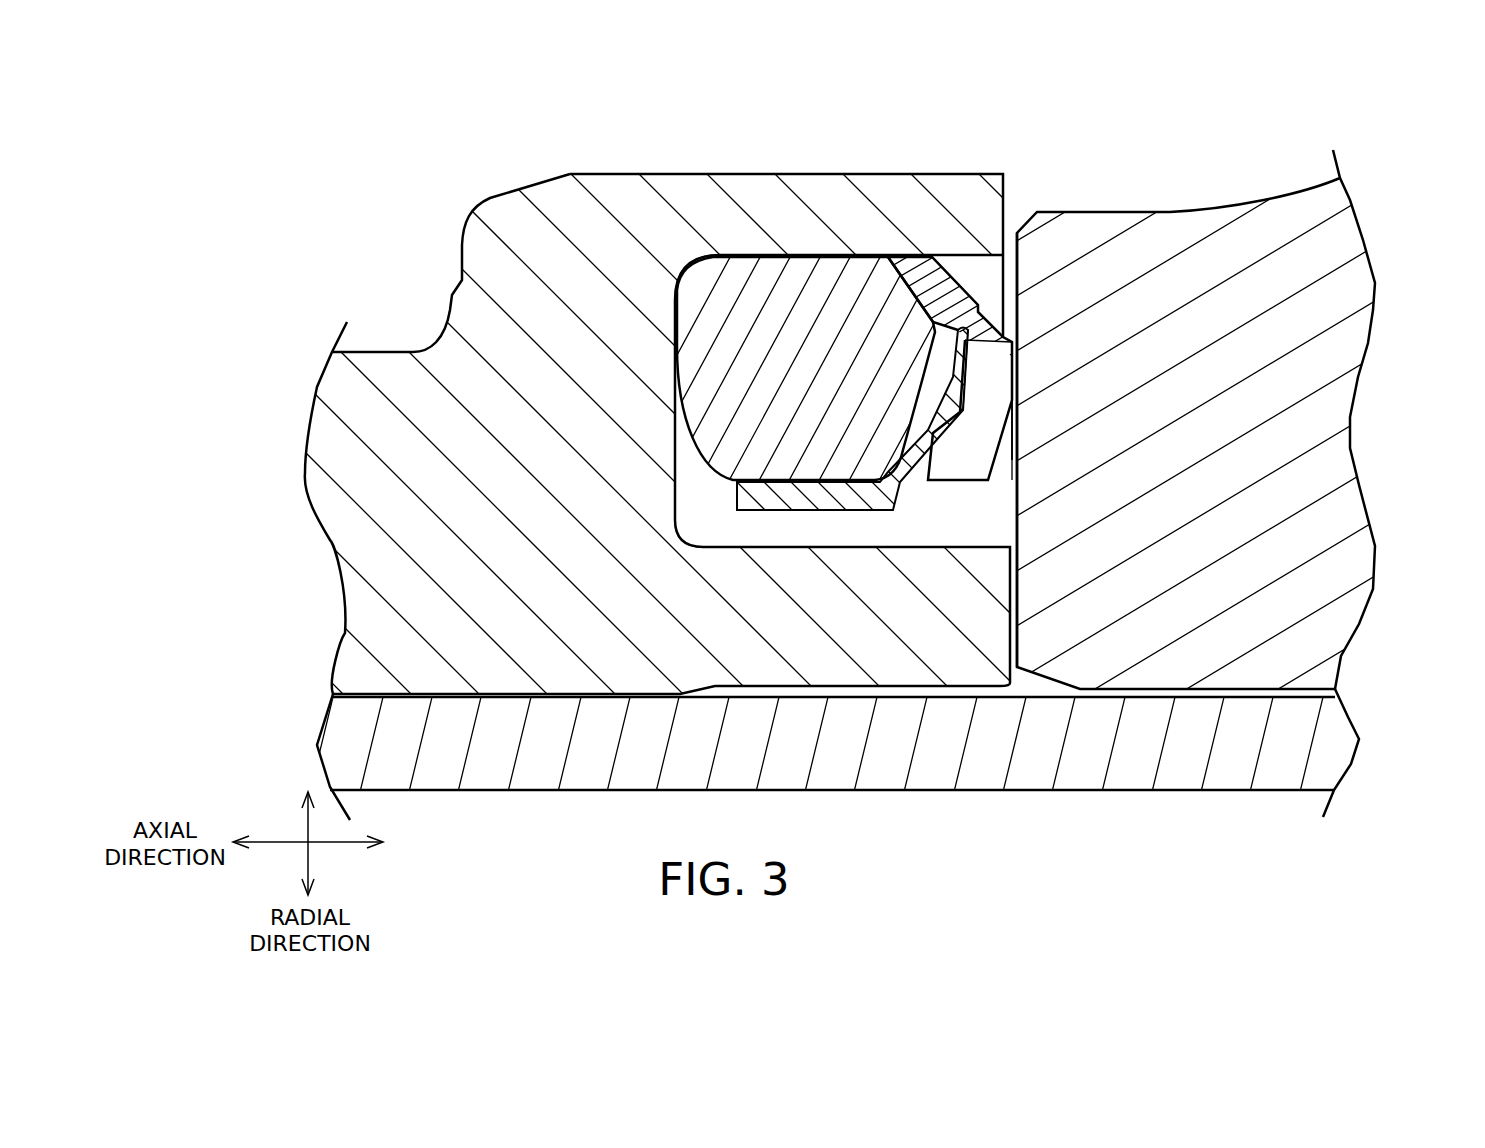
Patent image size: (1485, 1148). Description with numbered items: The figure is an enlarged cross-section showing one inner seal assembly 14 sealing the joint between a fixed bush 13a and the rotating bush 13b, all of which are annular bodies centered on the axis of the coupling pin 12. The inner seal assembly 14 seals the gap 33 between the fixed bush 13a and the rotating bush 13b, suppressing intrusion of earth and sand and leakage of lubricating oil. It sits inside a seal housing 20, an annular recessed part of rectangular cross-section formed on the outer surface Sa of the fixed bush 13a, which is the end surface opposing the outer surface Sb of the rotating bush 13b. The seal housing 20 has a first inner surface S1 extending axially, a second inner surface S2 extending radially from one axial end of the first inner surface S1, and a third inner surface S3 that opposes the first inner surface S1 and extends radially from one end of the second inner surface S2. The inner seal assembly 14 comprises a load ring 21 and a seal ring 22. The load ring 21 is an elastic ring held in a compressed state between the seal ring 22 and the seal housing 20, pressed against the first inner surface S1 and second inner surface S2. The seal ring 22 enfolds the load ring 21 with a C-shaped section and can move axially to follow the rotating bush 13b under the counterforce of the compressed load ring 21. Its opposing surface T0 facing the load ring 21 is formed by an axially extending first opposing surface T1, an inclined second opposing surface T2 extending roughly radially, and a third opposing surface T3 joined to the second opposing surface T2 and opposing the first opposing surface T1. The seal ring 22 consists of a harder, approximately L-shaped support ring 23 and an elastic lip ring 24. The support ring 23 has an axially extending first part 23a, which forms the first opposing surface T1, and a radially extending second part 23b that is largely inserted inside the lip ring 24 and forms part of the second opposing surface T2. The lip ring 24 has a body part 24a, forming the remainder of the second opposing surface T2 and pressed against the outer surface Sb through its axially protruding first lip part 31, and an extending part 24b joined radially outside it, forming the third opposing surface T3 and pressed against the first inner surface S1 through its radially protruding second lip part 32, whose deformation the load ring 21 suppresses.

The coupling pin 12 is at (876, 754).
The fixed bush 13a is at (742, 484).
The rotating bush 13b is at (1229, 452).
The inner seal assembly 14 is at (852, 82).
The seal housing 20 is at (804, 554).
The load ring 21 is at (805, 287).
The seal ring 22 is at (852, 122).
The support ring 23 is at (792, 483).
The first part 23a is at (819, 674).
The second part 23b is at (952, 591).
The lip ring 24 is at (922, 305).
The body part 24a is at (973, 440).
The extending part 24b is at (975, 216).
The first lip part 31 is at (1030, 353).
The second lip part 32 is at (941, 185).
The gap 33 is at (1013, 230).
The first inner surface S1 is at (728, 262).
The second inner surface S2 is at (677, 308).
The third inner surface S3 is at (767, 540).
The outer surface Sa is at (1010, 640).
The outer surface Sb is at (1020, 648).
The opposing surface T0 is at (1410, 374).
The first opposing surface T1 is at (1212, 444).
The second opposing surface T2 is at (1153, 409).
The third opposing surface T3 is at (1177, 374).